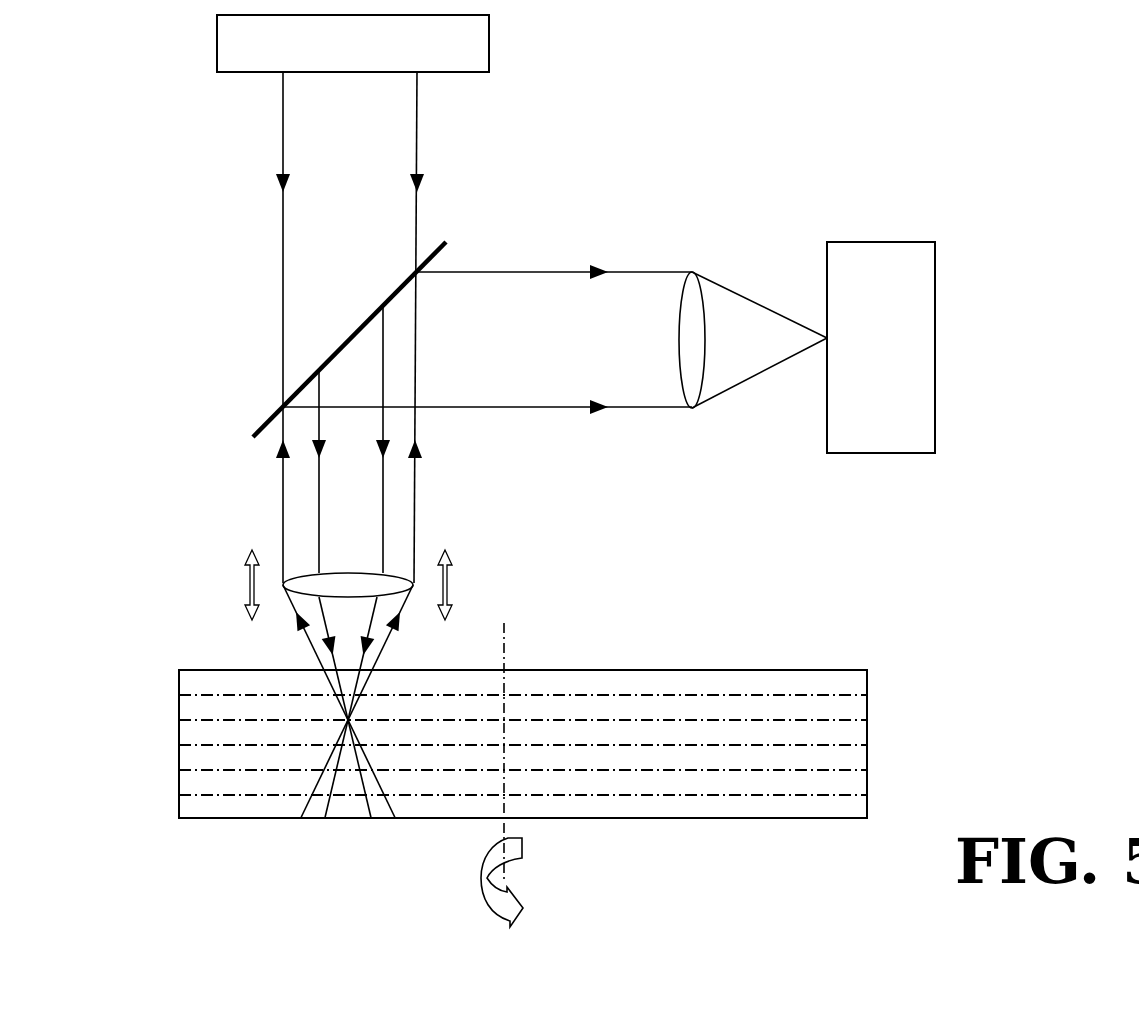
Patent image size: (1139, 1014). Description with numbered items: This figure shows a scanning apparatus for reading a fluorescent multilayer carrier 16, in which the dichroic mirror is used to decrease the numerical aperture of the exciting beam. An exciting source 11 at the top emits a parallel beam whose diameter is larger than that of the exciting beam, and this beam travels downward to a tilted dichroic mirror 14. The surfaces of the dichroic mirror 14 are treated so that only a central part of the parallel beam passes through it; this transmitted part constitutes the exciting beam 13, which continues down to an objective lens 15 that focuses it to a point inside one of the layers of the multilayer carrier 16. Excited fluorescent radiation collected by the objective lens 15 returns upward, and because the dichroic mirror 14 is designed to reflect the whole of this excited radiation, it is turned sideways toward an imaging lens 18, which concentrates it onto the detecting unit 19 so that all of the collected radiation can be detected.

The exciting source 11 is at (489, 42).
The exciting beam 13 is at (383, 493).
The dichroic mirror 14 is at (262, 420).
The objective lens 15 is at (397, 585).
The fluorescent multilayer carrier 16 is at (867, 756).
The imaging lens 18 is at (692, 272).
The detecting unit 19 is at (910, 242).